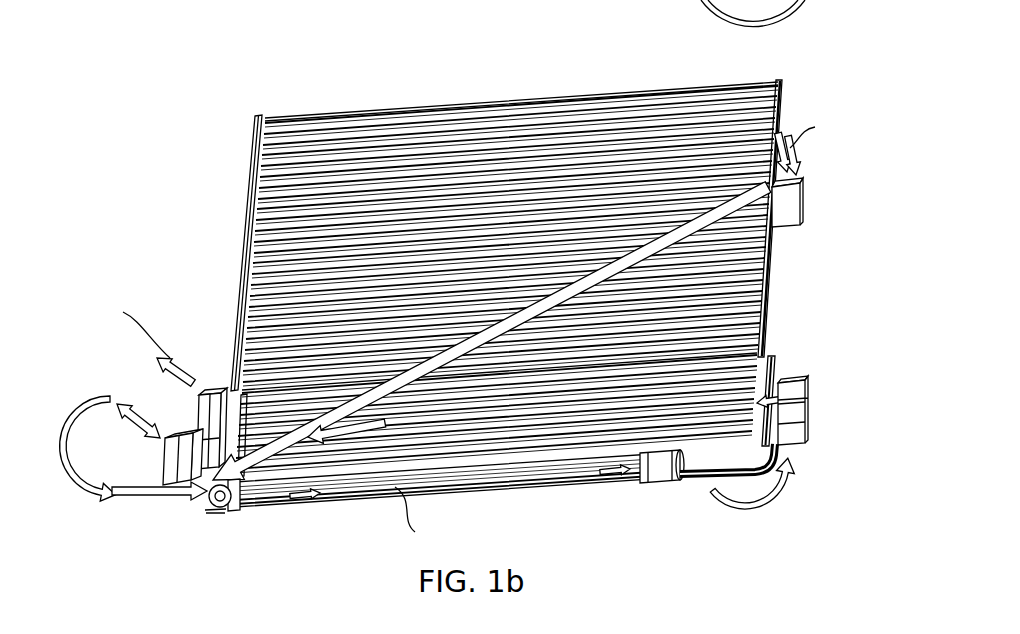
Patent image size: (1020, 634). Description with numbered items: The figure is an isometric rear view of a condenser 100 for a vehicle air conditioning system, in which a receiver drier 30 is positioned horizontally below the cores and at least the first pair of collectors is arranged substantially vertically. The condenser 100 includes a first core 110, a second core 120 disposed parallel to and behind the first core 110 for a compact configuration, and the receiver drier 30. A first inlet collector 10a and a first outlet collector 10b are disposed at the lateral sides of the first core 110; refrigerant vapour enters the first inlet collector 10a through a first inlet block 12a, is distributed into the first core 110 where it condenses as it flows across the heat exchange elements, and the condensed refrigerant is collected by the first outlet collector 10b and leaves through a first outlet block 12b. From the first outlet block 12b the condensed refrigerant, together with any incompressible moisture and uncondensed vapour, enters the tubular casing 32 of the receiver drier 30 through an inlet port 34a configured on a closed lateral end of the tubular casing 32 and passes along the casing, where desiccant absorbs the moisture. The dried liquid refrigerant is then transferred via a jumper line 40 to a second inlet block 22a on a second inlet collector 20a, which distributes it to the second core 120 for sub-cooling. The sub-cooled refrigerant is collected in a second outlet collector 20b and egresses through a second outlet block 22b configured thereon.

The condenser 100 is at (326, 90).
The first core 110 is at (437, 258).
The second core 120 is at (723, 397).
The first inlet collector 10a is at (780, 110).
The first outlet collector 10b is at (258, 147).
The first inlet block 12a is at (790, 202).
The first outlet block 12b is at (180, 430).
The second inlet collector 20a is at (767, 363).
The second outlet collector 20b is at (228, 392).
The second inlet block 22a is at (793, 413).
The second outlet block 22b is at (198, 390).
The receiver drier 30 is at (228, 512).
The tubular casing 32 is at (655, 481).
The inlet port 34a is at (200, 512).
The jumper line 40 is at (780, 447).